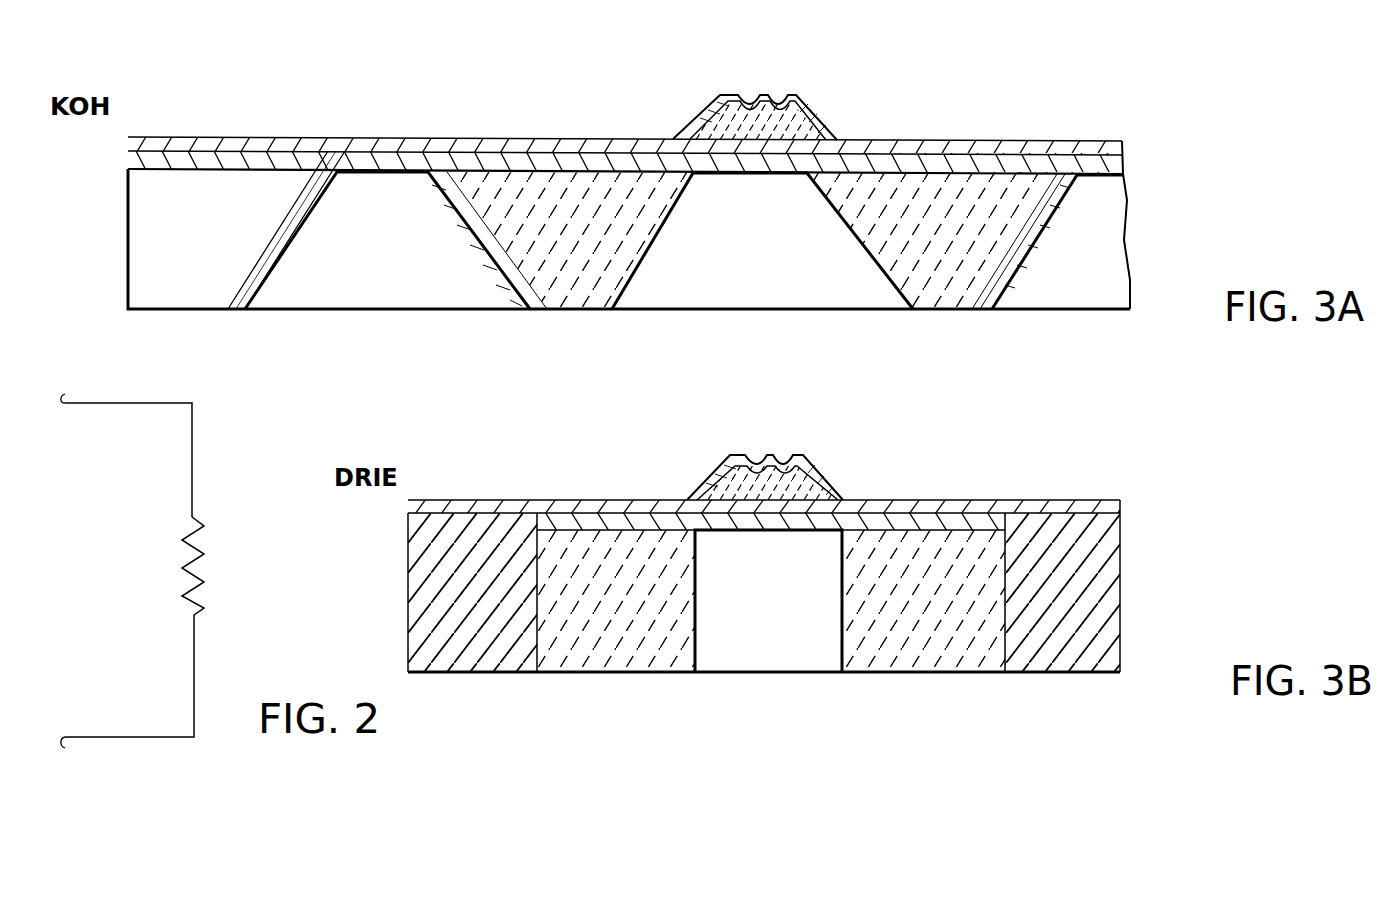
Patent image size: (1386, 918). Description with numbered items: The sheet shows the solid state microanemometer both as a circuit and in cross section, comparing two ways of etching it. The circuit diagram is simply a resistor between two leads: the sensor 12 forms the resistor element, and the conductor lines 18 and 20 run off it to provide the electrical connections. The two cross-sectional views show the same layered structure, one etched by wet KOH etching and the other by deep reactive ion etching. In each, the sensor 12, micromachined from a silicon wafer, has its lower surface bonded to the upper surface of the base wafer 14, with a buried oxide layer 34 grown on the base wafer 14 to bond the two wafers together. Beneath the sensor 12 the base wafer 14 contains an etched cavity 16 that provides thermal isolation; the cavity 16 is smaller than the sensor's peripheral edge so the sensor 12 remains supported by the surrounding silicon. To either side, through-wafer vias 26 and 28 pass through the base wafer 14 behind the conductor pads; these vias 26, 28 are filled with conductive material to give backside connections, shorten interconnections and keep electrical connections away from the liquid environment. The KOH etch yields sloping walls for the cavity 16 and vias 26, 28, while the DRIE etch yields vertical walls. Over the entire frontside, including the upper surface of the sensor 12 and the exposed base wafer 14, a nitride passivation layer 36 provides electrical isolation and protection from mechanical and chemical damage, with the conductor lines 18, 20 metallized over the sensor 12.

In FIG. 3A, the sensor 12 is at (798, 123).
In FIG. 3B, the sensor 12 is at (762, 487).
In FIG. 2, the sensor 12 is at (202, 570).
In FIG. 3A, the base wafer 14 is at (197, 275).
In FIG. 3B, the base wafer 14 is at (623, 643).
In FIG. 3A, the etched cavity 16 is at (770, 212).
In FIG. 3B, the etched cavity 16 is at (768, 601).
In FIG. 3A, the conductor line 18 is at (700, 127).
In FIG. 3B, the conductor line 18 is at (712, 478).
In FIG. 2, the conductor line 18 is at (115, 401).
In FIG. 3A, the conductor line 20 is at (823, 128).
In FIG. 3B, the conductor line 20 is at (823, 478).
In FIG. 2, the conductor line 20 is at (146, 737).
In FIG. 3A, the through-wafer via 26 is at (477, 227).
In FIG. 3B, the through-wafer via 26 is at (472, 645).
In FIG. 3A, the through-wafer via 28 is at (1033, 240).
In FIG. 3B, the through-wafer via 28 is at (1060, 653).
In FIG. 3A, the buried oxide layer 34 is at (985, 168).
In FIG. 3B, the buried oxide layer 34 is at (917, 520).
In FIG. 3A, the nitride passivation layer 36 is at (538, 139).
In FIG. 3B, the nitride passivation layer 36 is at (1060, 500).